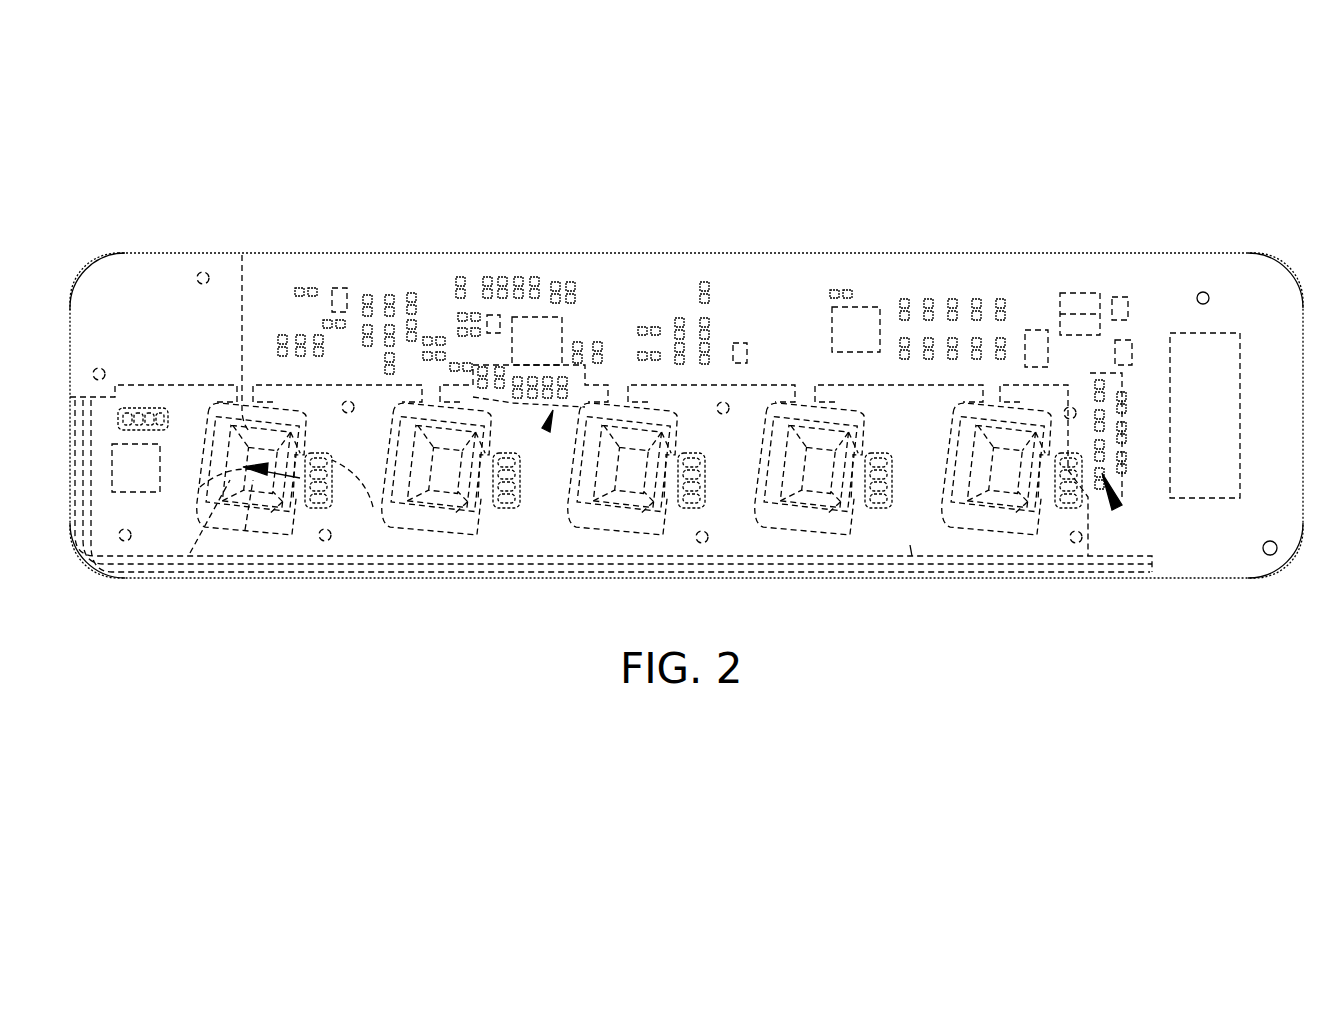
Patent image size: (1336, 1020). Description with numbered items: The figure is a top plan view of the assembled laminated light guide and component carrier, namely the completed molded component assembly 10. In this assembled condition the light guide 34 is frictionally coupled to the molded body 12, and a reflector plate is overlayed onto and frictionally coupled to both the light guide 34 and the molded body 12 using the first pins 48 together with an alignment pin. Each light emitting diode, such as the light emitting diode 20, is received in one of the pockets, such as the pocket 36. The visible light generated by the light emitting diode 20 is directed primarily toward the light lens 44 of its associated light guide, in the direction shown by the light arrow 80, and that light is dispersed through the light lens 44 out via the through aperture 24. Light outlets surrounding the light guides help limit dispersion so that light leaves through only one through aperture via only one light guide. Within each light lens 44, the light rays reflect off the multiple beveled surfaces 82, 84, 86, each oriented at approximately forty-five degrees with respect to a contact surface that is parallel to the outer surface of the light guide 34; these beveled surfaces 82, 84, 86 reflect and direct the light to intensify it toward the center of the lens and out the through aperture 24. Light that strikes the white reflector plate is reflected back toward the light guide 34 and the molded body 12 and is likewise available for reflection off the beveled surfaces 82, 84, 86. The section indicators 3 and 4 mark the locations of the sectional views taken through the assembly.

The molded component assembly 10 is at (892, 146).
The molded body 12 is at (1295, 262).
The first pins 48 is at (1206, 296).
The beveled surface 84 is at (242, 255).
The beveled surface 82 is at (200, 487).
The light lens 44 is at (190, 553).
The through aperture 24 is at (250, 470).
The beveled surface 86 is at (245, 530).
The light arrow 80 is at (300, 478).
The light emitting diode 20 is at (315, 503).
The pocket 36 is at (373, 507).
The light guide 34 is at (910, 545).
The section view 3 is at (545, 425).
The section view 4 is at (1112, 490).